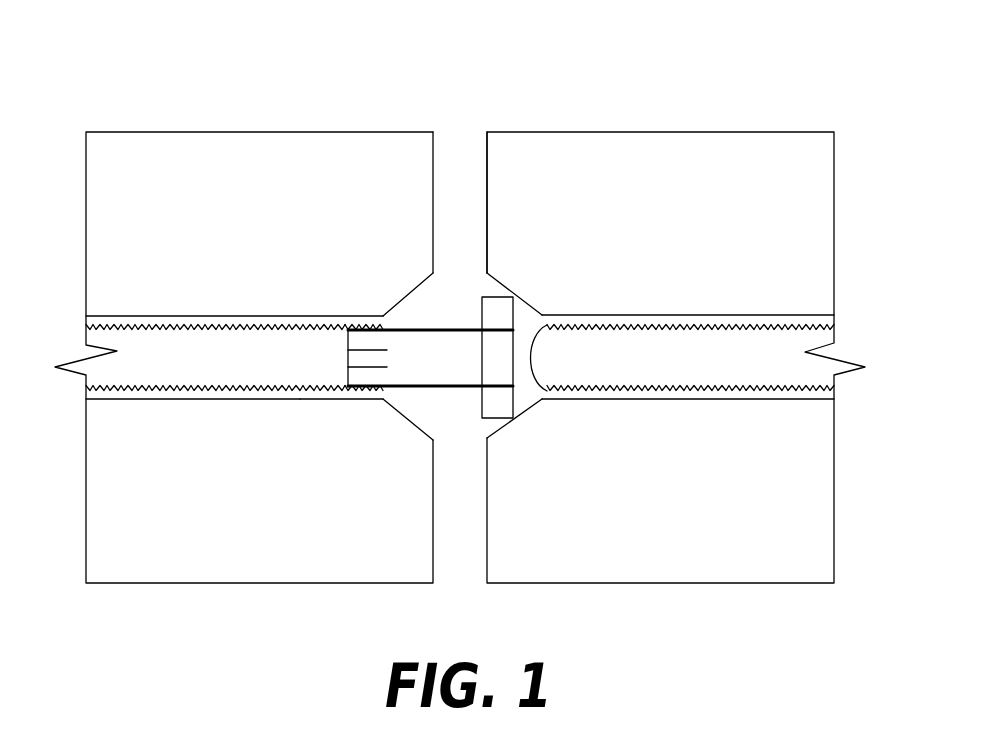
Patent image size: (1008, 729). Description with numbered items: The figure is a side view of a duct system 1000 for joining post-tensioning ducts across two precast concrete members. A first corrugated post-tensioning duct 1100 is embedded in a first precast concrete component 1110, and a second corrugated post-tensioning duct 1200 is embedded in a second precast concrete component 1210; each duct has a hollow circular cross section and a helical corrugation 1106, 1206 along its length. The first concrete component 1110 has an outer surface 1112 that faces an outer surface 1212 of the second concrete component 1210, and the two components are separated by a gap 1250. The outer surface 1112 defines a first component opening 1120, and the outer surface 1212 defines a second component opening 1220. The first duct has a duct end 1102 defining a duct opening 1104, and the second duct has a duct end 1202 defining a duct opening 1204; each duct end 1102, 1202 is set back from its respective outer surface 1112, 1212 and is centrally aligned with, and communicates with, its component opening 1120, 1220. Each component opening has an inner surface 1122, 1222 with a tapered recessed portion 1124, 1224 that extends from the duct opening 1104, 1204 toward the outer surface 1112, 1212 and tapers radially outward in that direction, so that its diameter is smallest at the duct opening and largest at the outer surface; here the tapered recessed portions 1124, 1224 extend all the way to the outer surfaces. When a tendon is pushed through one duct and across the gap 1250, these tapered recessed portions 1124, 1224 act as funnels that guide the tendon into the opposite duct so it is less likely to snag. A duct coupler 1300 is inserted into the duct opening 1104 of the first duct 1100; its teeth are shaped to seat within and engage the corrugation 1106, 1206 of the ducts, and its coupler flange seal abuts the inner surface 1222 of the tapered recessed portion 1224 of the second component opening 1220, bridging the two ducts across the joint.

The duct system 1000 is at (462, 322).
The first corrugated post-tensioning duct 1100 is at (262, 324).
The first precast concrete component 1110 is at (276, 324).
The outer surface of the first concrete component 1112 is at (436, 148).
The corrugation of the first duct 1106 is at (213, 323).
The duct opening of the first duct 1104 is at (360, 380).
The duct end of the first duct 1102 is at (374, 402).
The duct coupler 1300 is at (401, 390).
The inner surface of the first component opening 1122 is at (416, 427).
The tapered recessed portion of the first component opening 1124 is at (412, 302).
The first component opening 1120 is at (418, 415).
The gap 1250 is at (456, 566).
The second corrugated post-tensioning duct 1200 is at (681, 310).
The second precast concrete component 1210 is at (671, 310).
The outer surface of the second concrete component 1212 is at (488, 145).
The tapered recessed portion of the second component opening 1224 is at (493, 287).
The second component opening 1220 is at (490, 428).
The inner surface of the second component opening 1222 is at (510, 297).
The duct end of the second duct 1202 is at (545, 312).
The duct opening of the second duct 1204 is at (545, 400).
The corrugation of the second duct 1206 is at (693, 325).